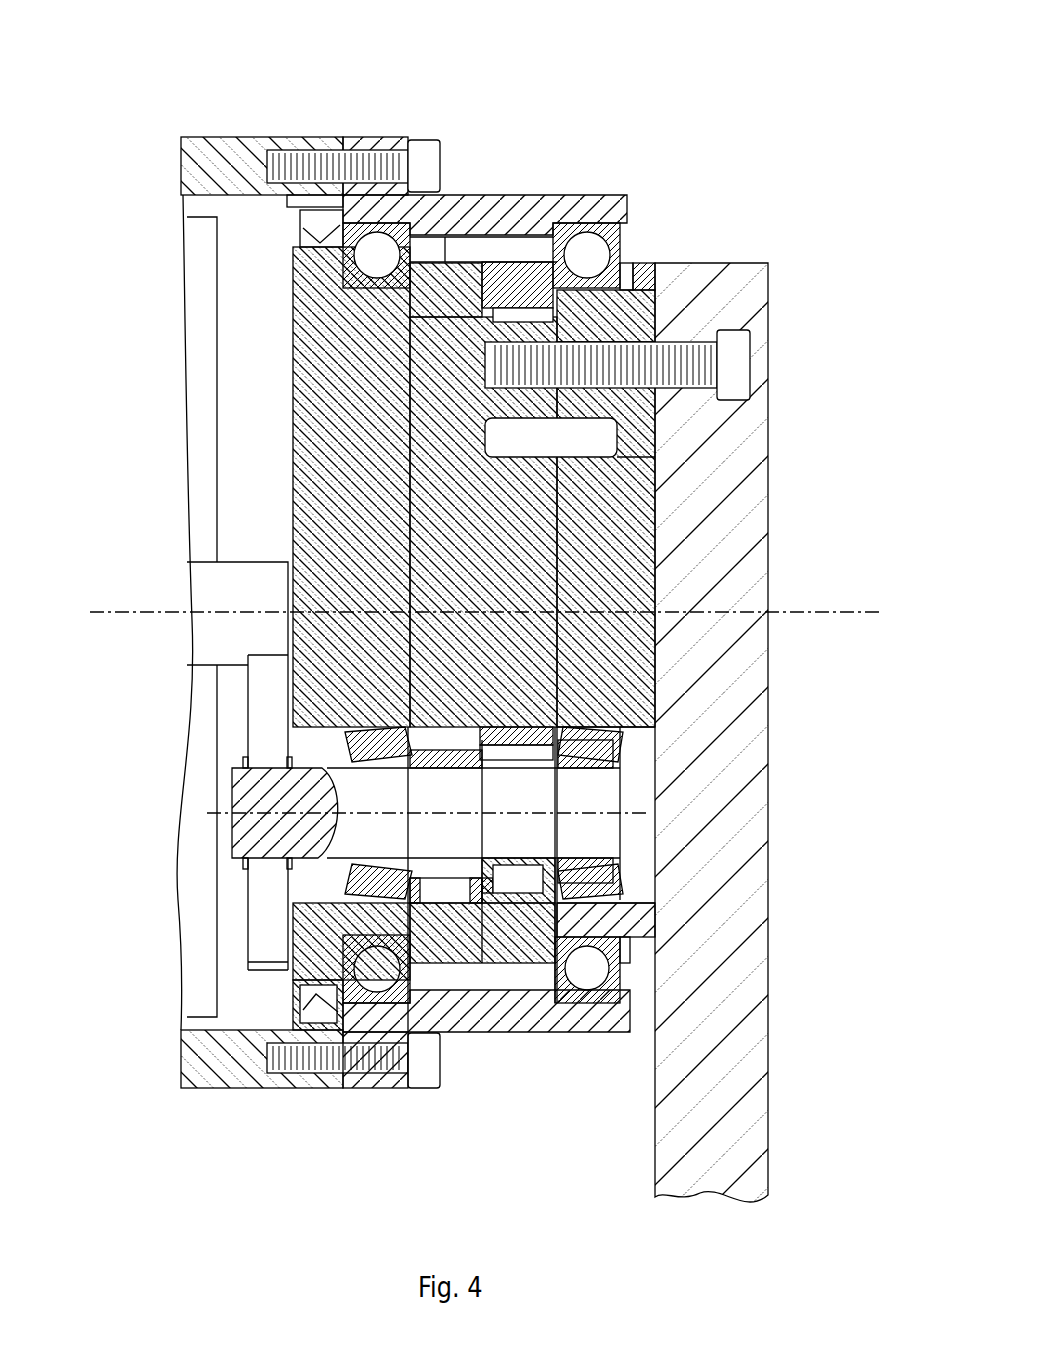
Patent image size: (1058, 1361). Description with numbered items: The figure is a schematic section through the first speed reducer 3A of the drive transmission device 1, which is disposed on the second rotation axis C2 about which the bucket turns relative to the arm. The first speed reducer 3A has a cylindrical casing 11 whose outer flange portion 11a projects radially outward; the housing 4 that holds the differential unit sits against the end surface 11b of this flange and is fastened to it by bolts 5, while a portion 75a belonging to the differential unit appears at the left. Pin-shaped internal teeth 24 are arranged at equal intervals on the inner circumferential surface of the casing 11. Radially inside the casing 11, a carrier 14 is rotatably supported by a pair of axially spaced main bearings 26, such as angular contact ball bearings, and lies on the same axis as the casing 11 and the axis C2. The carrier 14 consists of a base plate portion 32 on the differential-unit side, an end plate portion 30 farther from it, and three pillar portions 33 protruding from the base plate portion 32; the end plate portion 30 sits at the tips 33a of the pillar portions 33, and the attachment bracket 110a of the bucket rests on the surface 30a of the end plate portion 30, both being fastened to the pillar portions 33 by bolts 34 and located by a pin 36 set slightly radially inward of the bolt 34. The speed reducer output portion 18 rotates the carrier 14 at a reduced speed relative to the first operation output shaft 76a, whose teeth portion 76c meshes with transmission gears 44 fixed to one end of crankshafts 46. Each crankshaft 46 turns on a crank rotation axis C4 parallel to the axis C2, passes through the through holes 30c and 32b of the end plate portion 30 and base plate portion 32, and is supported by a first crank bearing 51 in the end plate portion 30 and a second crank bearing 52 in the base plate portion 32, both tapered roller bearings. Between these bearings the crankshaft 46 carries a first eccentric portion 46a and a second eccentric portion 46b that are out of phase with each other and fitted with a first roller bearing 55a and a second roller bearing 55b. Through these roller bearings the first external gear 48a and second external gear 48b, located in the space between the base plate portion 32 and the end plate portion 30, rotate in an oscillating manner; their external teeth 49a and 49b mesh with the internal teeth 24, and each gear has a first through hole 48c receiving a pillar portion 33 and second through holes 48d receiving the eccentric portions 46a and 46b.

The drive transmission device 1 is at (530, 112).
The first speed reducer 3A is at (662, 208).
The housing 4 is at (238, 137).
The bolt 5 is at (420, 137).
The casing 11 is at (600, 188).
The outer flange portion 11a is at (367, 137).
The end surface 11b is at (320, 137).
The carrier 14 is at (288, 300).
The speed reducer output portion 18 is at (226, 931).
The internal teeth 24 is at (540, 237).
The main bearing 26 is at (365, 1003).
The end plate portion 30 is at (637, 515).
The one surface 30a is at (617, 660).
The through hole 30c is at (605, 905).
The base plate portion 32 is at (300, 480).
The through hole 32b is at (300, 895).
The pillar portion 33 is at (505, 300).
The tip 33a is at (600, 333).
The bolt 34 is at (750, 375).
The pin 36 is at (622, 437).
The transmission gear 44 is at (258, 715).
The crankshaft 46 is at (602, 832).
The first eccentric portion 46a is at (563, 697).
The second eccentric portion 46b is at (345, 728).
The first external gear 48a is at (530, 965).
The second external gear 48b is at (435, 897).
The first through hole 48c is at (488, 433).
The second through hole 48d is at (605, 882).
The external teeth 49a is at (598, 262).
The external teeth 49b is at (455, 270).
The first crank bearing 51 is at (520, 738).
The second crank bearing 52 is at (232, 790).
The first roller bearing 55a is at (510, 887).
The second roller bearing 55b is at (400, 1033).
The mating surface 75a is at (185, 385).
The first operation output shaft 76a is at (250, 568).
The teeth portion 76c is at (258, 675).
The attachment bracket 110a is at (770, 1018).
The second rotation axis C2 is at (830, 610).
The crank rotation axis C4 is at (642, 795).